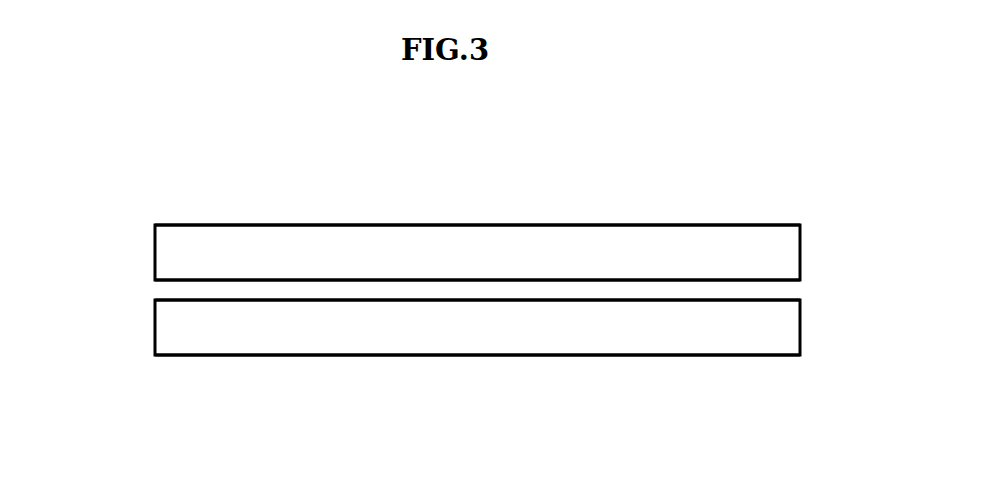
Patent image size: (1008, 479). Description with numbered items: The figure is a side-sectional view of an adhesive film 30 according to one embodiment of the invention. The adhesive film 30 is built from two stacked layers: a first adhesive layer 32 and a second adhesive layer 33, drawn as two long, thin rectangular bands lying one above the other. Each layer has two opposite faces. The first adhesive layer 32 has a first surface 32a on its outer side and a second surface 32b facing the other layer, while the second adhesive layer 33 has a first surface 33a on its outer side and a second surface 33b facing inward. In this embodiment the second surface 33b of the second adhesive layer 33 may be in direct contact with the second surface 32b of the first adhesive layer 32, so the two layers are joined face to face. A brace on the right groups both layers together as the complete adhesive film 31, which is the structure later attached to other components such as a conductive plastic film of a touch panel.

The adhesive film 30 is at (502, 178).
The adhesive film 31 is at (810, 225).
The first adhesive layer 32 is at (694, 358).
The first surface of the first adhesive layer 32a is at (284, 364).
The second surface of the first adhesive layer 32b is at (147, 303).
The second adhesive layer 33 is at (694, 222).
The first surface of the second adhesive layer 33a is at (284, 216).
The second surface of the second adhesive layer 33b is at (147, 277).